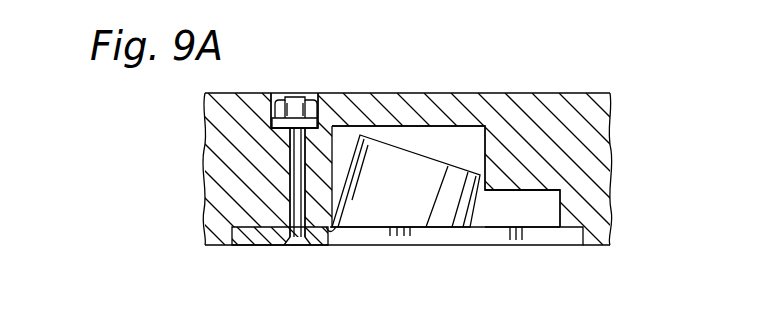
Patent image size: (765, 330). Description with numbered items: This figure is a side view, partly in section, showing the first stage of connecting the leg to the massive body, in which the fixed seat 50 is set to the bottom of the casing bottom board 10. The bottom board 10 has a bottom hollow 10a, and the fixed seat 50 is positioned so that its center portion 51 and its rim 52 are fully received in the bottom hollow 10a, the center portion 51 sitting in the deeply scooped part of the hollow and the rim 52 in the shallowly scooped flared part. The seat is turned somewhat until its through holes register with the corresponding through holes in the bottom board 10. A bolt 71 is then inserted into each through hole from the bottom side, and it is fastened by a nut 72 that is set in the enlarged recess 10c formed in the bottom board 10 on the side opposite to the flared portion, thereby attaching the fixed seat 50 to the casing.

The bottom board 10 is at (550, 104).
The bottom hollow 10a is at (443, 133).
The enlarged recess 10c is at (315, 99).
The fixed seat 50 is at (411, 217).
The center portion 51 is at (375, 148).
The rim 52 is at (533, 238).
The bolt 71 is at (295, 212).
The nut 72 is at (289, 103).